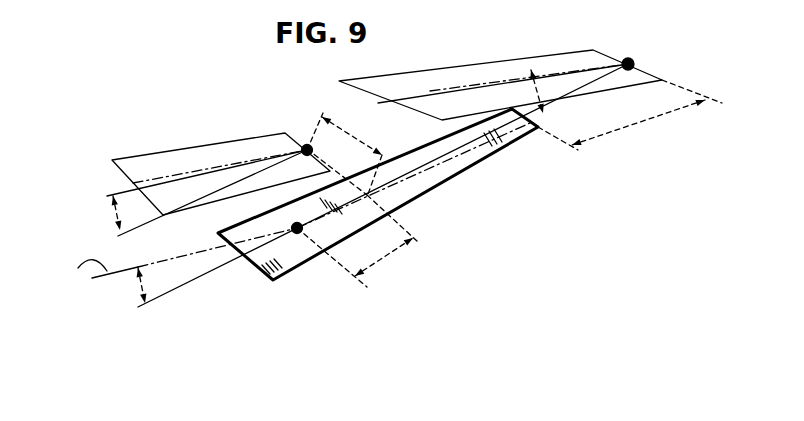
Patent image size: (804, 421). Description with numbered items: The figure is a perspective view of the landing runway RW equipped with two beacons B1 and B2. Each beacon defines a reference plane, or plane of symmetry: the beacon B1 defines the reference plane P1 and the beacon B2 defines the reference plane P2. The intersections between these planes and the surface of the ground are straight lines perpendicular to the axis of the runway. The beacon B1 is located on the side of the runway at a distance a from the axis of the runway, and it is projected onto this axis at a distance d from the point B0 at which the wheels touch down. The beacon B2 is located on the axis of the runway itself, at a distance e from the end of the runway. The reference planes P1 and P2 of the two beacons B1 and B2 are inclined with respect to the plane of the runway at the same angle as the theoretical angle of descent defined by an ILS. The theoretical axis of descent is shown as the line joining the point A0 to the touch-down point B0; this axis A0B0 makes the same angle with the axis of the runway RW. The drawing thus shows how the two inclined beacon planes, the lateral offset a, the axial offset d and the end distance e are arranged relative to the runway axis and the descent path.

The landing runway RW is at (438, 173).
The reference plane of beacon B1 P1 is at (157, 163).
The reference plane of beacon B2 P2 is at (498, 72).
The point of touch-down of the wheels B0 is at (300, 233).
The beacon B1 is at (306, 146).
The beacon B2 is at (633, 62).
The end point of theoretical axis of descent A0 is at (179, 262).
The distance of beacon B1 from runway axis a is at (344, 153).
The distance from touch-down point to projection of beacon B1 d is at (357, 241).
The distance of beacon B2 from end of runway e is at (630, 115).